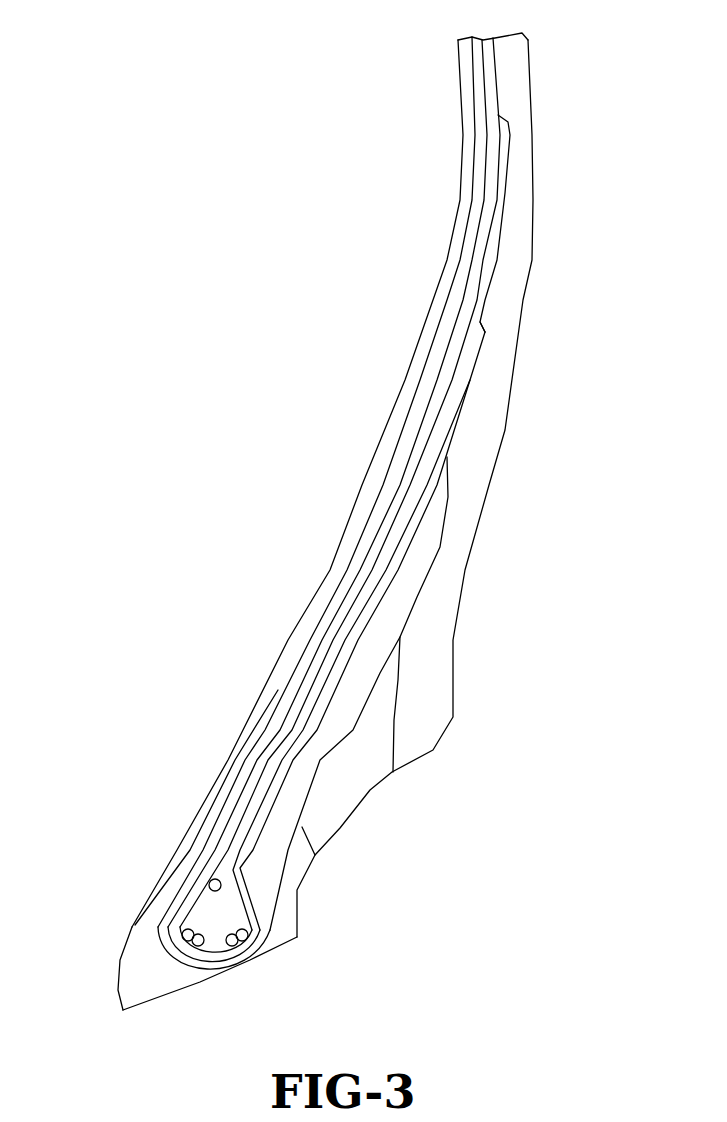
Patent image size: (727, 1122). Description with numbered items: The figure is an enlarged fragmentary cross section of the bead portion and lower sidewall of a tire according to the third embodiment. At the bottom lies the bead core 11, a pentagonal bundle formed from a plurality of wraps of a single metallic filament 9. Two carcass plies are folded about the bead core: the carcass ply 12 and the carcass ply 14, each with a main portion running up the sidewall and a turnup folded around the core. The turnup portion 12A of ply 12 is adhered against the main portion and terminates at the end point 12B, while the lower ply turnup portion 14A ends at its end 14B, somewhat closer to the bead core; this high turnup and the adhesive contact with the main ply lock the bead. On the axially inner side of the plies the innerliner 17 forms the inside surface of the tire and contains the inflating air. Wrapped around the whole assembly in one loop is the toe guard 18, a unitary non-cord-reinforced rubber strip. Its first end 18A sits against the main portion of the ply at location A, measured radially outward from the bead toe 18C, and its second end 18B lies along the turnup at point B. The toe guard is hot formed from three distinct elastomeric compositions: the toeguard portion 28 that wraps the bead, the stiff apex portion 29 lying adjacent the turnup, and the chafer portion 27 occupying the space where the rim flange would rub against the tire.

The metallic filament 9 is at (242, 935).
The bead core 11 is at (213, 922).
The carcass ply 12 is at (488, 62).
The turnup portion 12A is at (505, 193).
The end point 12B is at (500, 113).
The carcass ply 14 is at (473, 220).
The turnup portion 14A is at (470, 380).
The end 14B is at (480, 322).
The innerliner 17 is at (467, 148).
The toe guard 18 is at (195, 975).
The first end 18A is at (208, 835).
The second end 18B is at (398, 600).
The bead toe 18C is at (123, 1010).
The chafer portion 27 is at (357, 778).
The toeguard portion 28 is at (283, 908).
The apex portion 29 is at (415, 550).
The location A is at (285, 692).
The point B is at (447, 457).